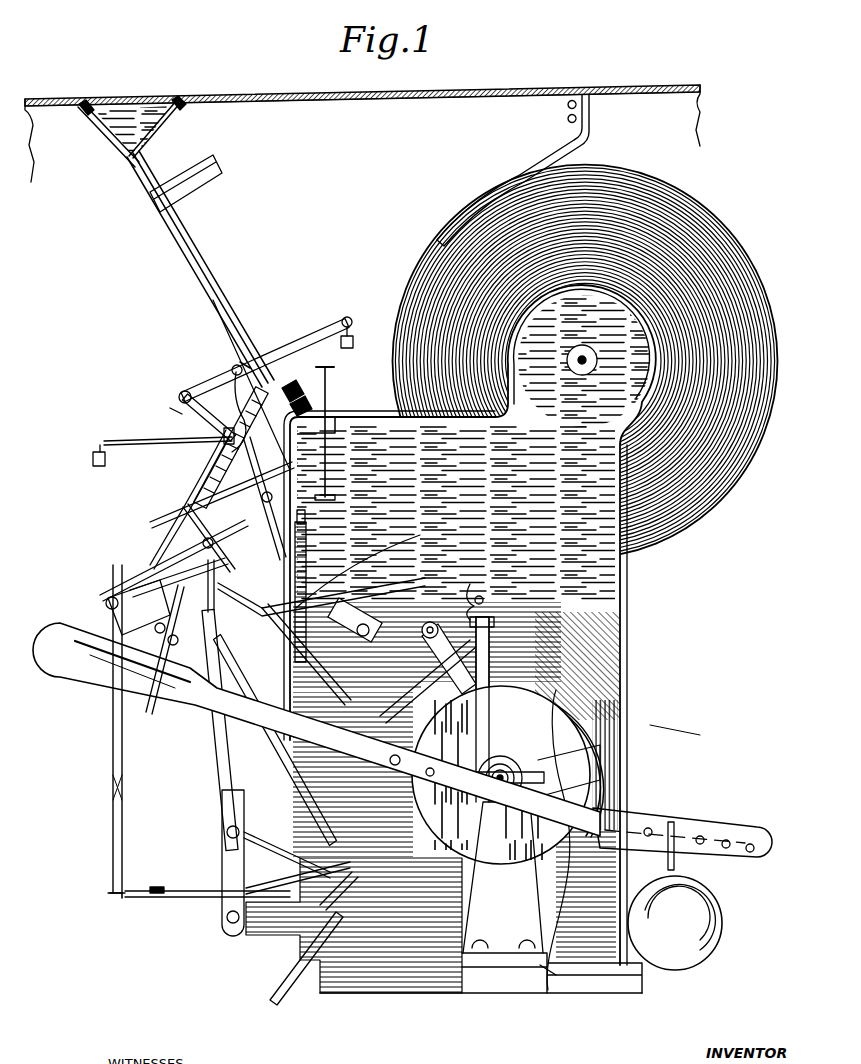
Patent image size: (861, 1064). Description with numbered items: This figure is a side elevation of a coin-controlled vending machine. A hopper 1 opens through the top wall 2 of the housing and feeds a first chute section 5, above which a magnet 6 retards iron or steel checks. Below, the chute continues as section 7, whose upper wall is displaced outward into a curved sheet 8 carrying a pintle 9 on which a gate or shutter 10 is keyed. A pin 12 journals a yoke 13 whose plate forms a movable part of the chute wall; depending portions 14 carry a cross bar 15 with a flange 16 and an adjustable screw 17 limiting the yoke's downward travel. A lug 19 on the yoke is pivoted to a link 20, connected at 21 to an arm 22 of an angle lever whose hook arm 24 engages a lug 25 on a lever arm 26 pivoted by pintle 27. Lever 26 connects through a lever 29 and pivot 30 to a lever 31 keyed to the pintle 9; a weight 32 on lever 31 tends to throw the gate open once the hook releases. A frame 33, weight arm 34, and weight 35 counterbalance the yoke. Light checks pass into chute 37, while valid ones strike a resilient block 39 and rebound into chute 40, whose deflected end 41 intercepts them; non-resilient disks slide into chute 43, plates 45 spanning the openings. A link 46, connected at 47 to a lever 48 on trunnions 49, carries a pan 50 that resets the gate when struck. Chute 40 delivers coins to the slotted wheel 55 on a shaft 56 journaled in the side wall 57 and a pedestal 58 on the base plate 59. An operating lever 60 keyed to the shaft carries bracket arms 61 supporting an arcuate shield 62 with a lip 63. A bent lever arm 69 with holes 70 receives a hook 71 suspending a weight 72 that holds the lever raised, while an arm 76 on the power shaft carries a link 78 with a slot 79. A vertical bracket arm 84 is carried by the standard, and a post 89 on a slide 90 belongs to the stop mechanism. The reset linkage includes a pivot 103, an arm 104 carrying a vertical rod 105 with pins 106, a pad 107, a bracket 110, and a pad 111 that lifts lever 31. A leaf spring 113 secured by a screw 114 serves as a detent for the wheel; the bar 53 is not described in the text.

The hopper 1 is at (130, 102).
The top wall 2 is at (312, 96).
The chute section 5 is at (186, 252).
The magnet 6 is at (208, 192).
The chute section 7 is at (198, 490).
The curved sheet 8 is at (245, 396).
The pintle 9 is at (232, 366).
The gate or shutter 10 is at (235, 350).
The pin 12 is at (214, 500).
The yoke 13 is at (215, 456).
The depending portions 14 is at (312, 441).
The cross bar 15 is at (314, 365).
The flange 16 is at (300, 386).
The screw 17 is at (308, 404).
The lug 19 is at (246, 488).
The link 20 is at (246, 572).
The pivotal connection 21 is at (308, 556).
The arm of angle lever 22 is at (310, 580).
The hook arm 24 is at (300, 510).
The lug 25 is at (328, 478).
The lever arm 26 is at (112, 560).
The pintle 27 is at (180, 540).
The lever 29 is at (170, 412).
The pivotal connection 30 is at (176, 392).
The lever 31 is at (205, 374).
The weight 32 is at (355, 340).
The frame 33 is at (222, 432).
The weight arm 34 is at (112, 440).
The weight 35 is at (92, 462).
The chute 37 is at (104, 604).
The resilient block 39 is at (112, 595).
The chute 40 is at (321, 608).
The deflected upper end 41 is at (236, 546).
The chute 43 is at (304, 654).
The plates 45 is at (150, 704).
The link 46 is at (108, 732).
The pivotal connection 47 is at (119, 915).
The lever 48 is at (192, 900).
The trunnions 49 is at (158, 886).
The pan 50 is at (360, 880).
The bar 53 is at (276, 1008).
The wheel 55 is at (501, 775).
The shaft 56 is at (520, 760).
The side wall 57 is at (602, 578).
The pedestal 58 is at (504, 897).
The base plate 59 is at (600, 995).
The operating lever 60 is at (186, 712).
The bracket arms 61 is at (560, 735).
The arcuate plate or shield 62 is at (525, 670).
The lip 63 is at (468, 707).
The lever arm 69 is at (732, 828).
The holes 70 is at (745, 876).
The hook 71 is at (678, 830).
The weight 72 is at (675, 923).
The arm 76 is at (540, 660).
The link 78 is at (284, 472).
The slot 79 is at (625, 792).
The vertical arm 84 is at (489, 718).
The post 89 is at (467, 592).
The slide 90 is at (387, 607).
The pivot 103 is at (404, 506).
The arm 104 is at (340, 543).
The vertical rod 105 is at (356, 590).
The pins 106 is at (350, 528).
The pad 107 is at (334, 496).
The bracket 110 is at (352, 400).
The pad 111 is at (336, 362).
The leaf spring 113 is at (554, 990).
The screw 114 is at (540, 985).